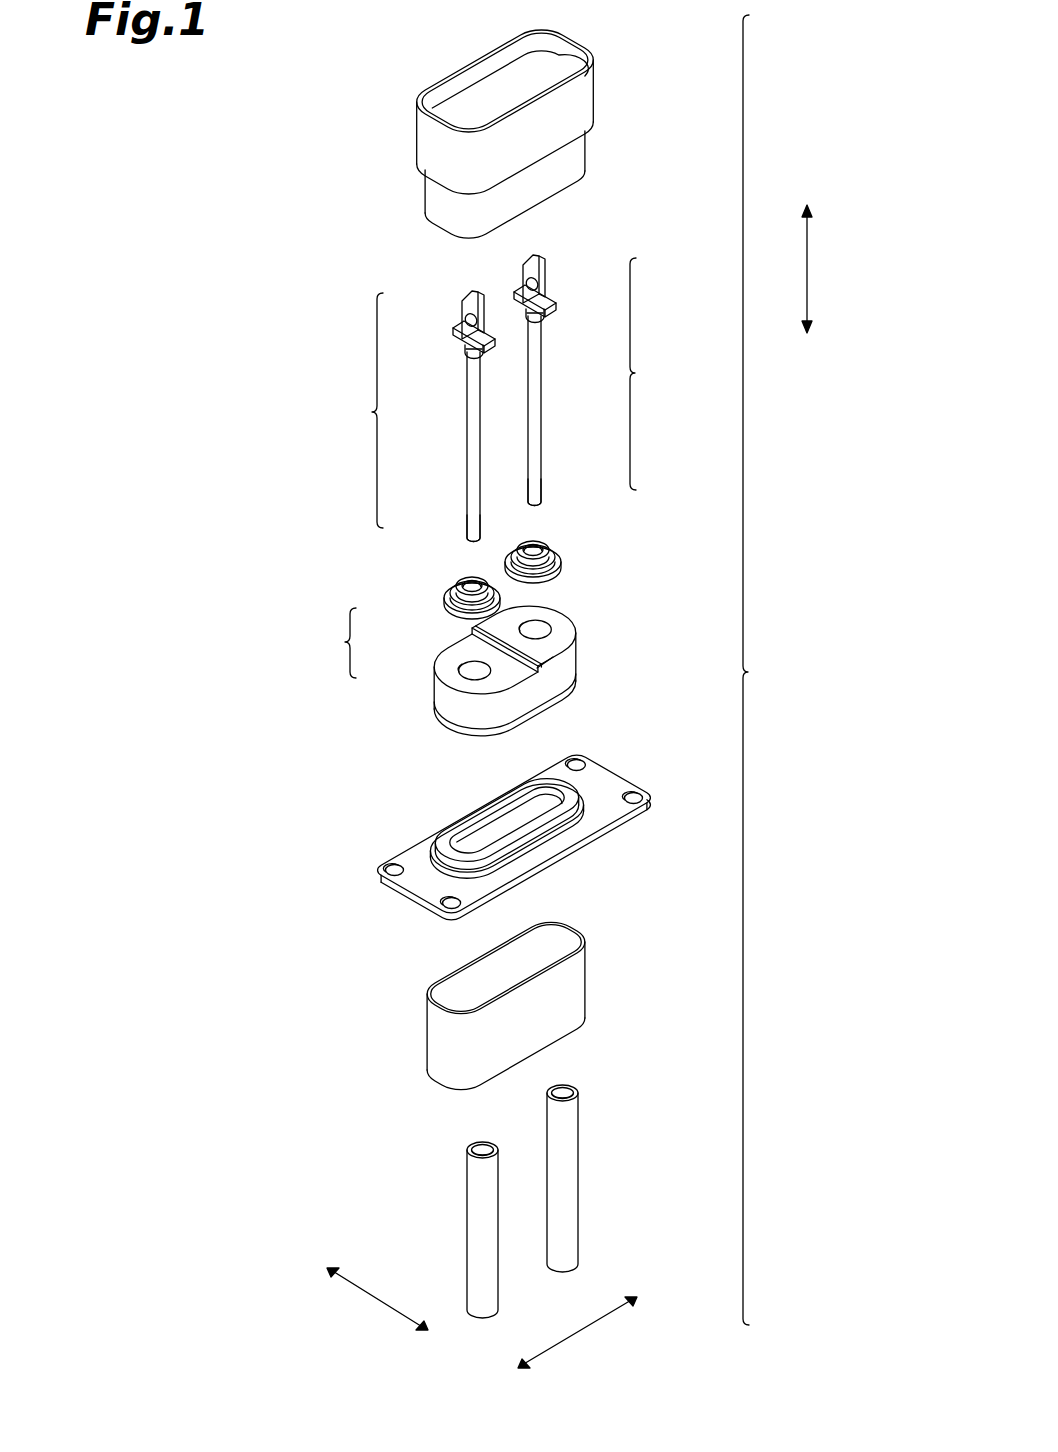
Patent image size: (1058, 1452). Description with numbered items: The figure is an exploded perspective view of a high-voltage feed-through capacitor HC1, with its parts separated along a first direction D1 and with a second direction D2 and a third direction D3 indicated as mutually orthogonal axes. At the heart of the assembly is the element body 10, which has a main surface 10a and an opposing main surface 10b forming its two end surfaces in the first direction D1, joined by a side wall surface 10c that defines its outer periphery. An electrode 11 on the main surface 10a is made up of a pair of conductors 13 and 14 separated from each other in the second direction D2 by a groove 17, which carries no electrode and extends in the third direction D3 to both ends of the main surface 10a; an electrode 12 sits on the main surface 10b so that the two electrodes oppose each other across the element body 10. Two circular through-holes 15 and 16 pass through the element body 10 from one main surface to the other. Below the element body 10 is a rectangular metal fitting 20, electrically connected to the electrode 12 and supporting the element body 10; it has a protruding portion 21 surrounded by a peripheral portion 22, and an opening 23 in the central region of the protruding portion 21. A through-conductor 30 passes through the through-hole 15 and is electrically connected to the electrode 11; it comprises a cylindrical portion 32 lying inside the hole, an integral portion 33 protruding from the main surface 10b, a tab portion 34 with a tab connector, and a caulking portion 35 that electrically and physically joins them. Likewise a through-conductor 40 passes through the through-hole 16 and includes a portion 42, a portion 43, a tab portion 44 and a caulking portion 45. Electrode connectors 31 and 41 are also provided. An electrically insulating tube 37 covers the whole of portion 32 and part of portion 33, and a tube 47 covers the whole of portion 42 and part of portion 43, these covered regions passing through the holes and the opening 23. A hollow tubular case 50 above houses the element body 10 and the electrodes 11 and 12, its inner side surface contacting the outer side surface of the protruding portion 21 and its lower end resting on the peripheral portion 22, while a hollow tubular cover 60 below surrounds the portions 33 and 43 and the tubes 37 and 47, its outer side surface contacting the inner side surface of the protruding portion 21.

The element body 10 is at (477, 689).
The main surface 10a is at (460, 687).
The main surface 10b is at (476, 736).
The side wall surface 10c is at (448, 733).
The electrode 11 is at (422, 651).
The electrode 12 is at (568, 691).
The conductor 13 is at (464, 665).
The conductor 14 is at (482, 632).
The through-hole 15 is at (553, 657).
The through-hole 16 is at (536, 628).
The groove 17 is at (540, 678).
The metal fitting 20 is at (617, 775).
The protruding portion 21 is at (445, 840).
The peripheral portion 22 is at (557, 855).
The opening 23 is at (538, 804).
The through-conductor 30 is at (418, 455).
The electrode connector 31 is at (455, 582).
The portion 32 is at (469, 373).
The portion 33 is at (469, 518).
The tab portion 34 is at (463, 300).
The caulking portion 35 is at (460, 337).
The tube 37 is at (467, 1138).
The through-conductor 40 is at (589, 419).
The electrode connector 41 is at (549, 549).
The portion 42 is at (575, 411).
The portion 43 is at (575, 483).
The tab portion 44 is at (567, 286).
The caulking portion 45 is at (573, 325).
The tube 47 is at (577, 1086).
The case 50 is at (566, 108).
The cover 60 is at (570, 997).
The high-voltage feed-through capacitor HC1 is at (778, 670).
The first direction D1 is at (836, 269).
The second direction D2 is at (578, 1332).
The third direction D3 is at (368, 1297).